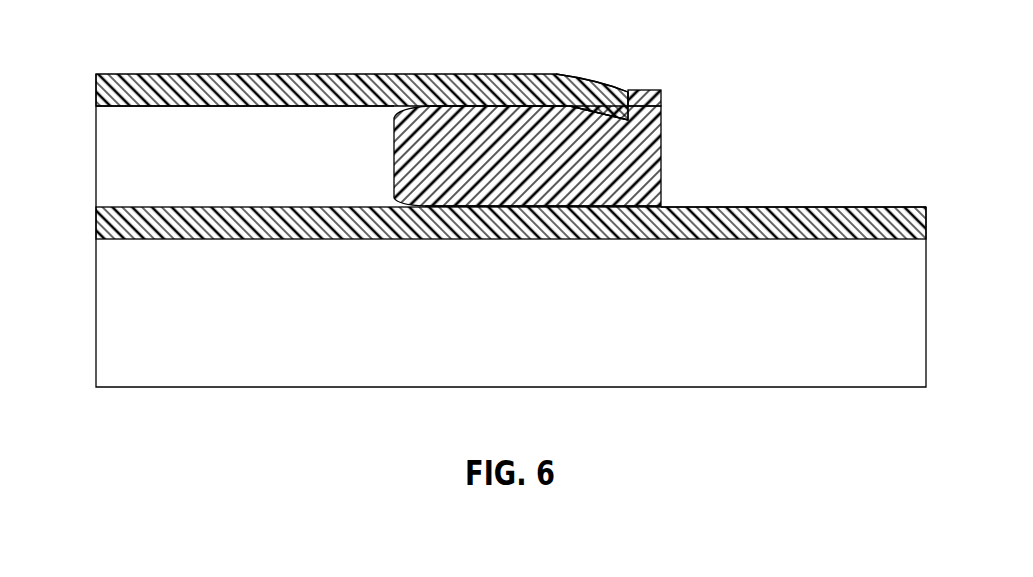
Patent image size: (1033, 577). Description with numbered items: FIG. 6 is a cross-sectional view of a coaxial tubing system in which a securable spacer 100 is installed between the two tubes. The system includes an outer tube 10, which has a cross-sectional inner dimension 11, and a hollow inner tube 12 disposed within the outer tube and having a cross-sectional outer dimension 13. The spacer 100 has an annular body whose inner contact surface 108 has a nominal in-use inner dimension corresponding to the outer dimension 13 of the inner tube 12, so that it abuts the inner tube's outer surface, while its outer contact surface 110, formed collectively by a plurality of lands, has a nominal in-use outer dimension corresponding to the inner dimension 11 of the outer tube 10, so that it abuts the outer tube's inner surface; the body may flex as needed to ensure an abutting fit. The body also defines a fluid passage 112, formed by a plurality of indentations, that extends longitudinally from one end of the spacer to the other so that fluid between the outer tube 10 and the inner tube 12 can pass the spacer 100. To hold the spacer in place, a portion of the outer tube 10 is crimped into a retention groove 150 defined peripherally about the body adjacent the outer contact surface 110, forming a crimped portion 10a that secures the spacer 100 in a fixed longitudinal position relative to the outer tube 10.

The outer tube 10 is at (334, 92).
The crimped portion 10a is at (610, 106).
The cross-sectional inner dimension 11 is at (158, 107).
The hollow inner tube 12 is at (813, 228).
The cross-sectional outer dimension 13 is at (698, 204).
The securable spacer 100 is at (485, 147).
The inner contact surface 108 is at (582, 200).
The outer contact surface 110 is at (511, 112).
The fluid passage 112 is at (637, 105).
The retention groove 150 is at (603, 115).